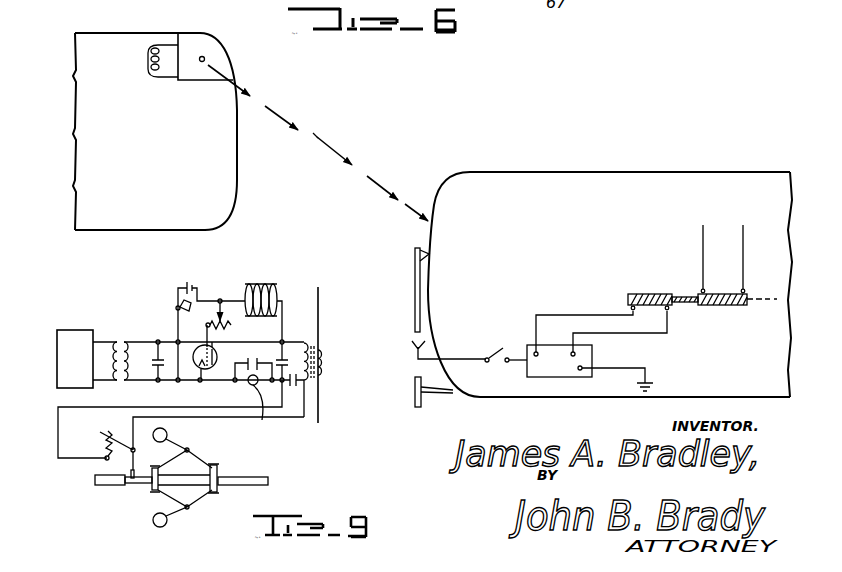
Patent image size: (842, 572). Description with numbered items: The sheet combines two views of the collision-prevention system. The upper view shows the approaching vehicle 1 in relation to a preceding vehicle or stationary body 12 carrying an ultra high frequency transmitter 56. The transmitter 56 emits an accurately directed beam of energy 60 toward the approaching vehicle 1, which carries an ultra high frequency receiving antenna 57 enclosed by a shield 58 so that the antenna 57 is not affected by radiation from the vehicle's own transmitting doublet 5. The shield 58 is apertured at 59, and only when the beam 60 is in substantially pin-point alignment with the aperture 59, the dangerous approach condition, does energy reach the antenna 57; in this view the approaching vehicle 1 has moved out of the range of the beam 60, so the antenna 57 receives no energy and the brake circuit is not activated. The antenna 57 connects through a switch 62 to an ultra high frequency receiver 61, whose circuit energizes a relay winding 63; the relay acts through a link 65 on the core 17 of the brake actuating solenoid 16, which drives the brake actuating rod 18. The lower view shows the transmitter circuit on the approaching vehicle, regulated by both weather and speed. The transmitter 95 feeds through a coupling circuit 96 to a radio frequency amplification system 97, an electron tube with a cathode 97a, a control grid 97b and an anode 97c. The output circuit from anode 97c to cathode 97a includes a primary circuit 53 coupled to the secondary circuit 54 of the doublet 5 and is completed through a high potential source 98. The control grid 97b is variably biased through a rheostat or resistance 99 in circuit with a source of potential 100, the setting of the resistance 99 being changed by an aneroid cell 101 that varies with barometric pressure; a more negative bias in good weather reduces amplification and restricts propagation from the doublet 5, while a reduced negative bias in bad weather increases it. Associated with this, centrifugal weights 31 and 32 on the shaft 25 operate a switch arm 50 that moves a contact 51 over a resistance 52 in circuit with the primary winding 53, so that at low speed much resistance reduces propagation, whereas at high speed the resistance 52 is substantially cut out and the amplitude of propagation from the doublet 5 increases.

In FIG. 9, the approaching vehicle 1 is at (518, 186).
In FIG. 6, the transmitter housing 12 is at (226, 190).
In FIG. 6, the ultra high frequency transmitter 56 is at (210, 42).
In FIG. 6, the ultra high frequency beam of energy 60 is at (318, 134).
In FIG. 9, the shield 58 is at (413, 311).
In FIG. 9, the ultra high frequency receiving antenna 57 is at (413, 351).
In FIG. 9, the aperture 59 is at (417, 376).
In FIG. 9, the switch 62 is at (500, 350).
In FIG. 9, the ultra high frequency receiver 61 is at (550, 367).
In FIG. 9, the relay winding 63 is at (645, 290).
In FIG. 9, the link 65 is at (685, 306).
In FIG. 9, the brake actuating solenoid 16 is at (722, 289).
In FIG. 9, the core 17 is at (745, 293).
In FIG. 9, the brake actuating rod 18 is at (760, 308).
In FIG. 9, the transmitter 95 is at (72, 323).
In FIG. 9, the coupling circuit 96 is at (122, 342).
In FIG. 9, the radio frequency amplification system 97 is at (197, 346).
In FIG. 9, the cathode 97a is at (192, 372).
In FIG. 9, the control grid 97b is at (250, 384).
In FIG. 9, the anode 97c is at (215, 350).
In FIG. 9, the rheostat or resistance 99 is at (230, 317).
In FIG. 9, the source of potential 100 is at (177, 304).
In FIG. 9, the aneroid cell 101 is at (275, 280).
In FIG. 9, the primary circuit 53 is at (305, 343).
In FIG. 9, the secondary circuit 54 is at (324, 364).
In FIG. 9, the doublet 5 is at (321, 309).
In FIG. 9, the high potential source 98 is at (181, 419).
In FIG. 9, the contact 51 is at (105, 432).
In FIG. 9, the resistance 52 is at (100, 449).
In FIG. 9, the switch arm 50 is at (125, 445).
In FIG. 9, the shaft 25 is at (263, 478).
In FIG. 9, the centrifugal weight 31 is at (167, 435).
In FIG. 9, the centrifugal weight 32 is at (167, 522).